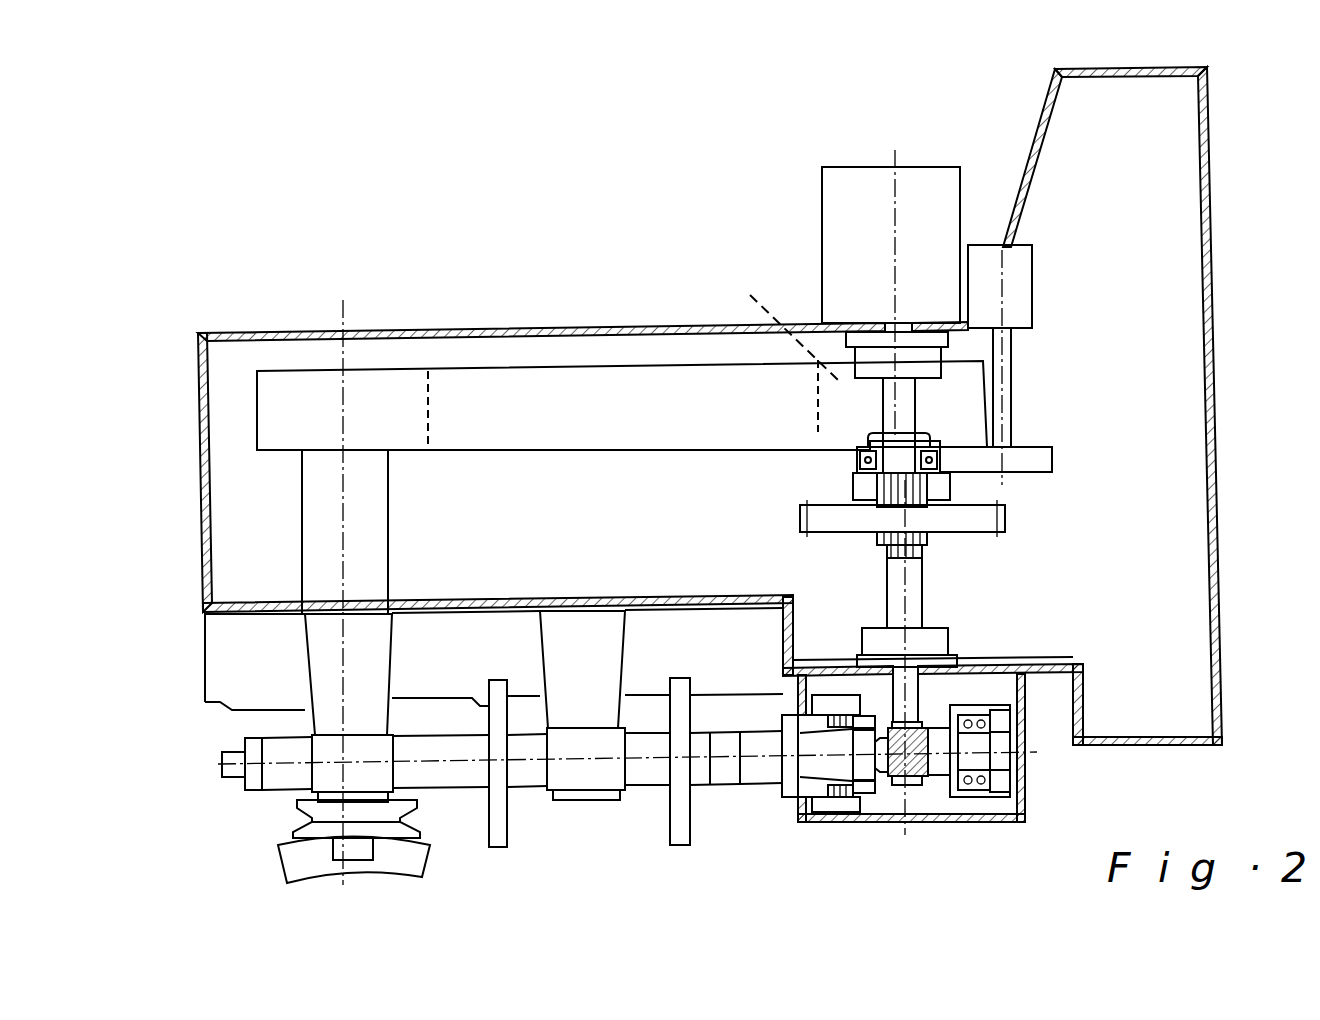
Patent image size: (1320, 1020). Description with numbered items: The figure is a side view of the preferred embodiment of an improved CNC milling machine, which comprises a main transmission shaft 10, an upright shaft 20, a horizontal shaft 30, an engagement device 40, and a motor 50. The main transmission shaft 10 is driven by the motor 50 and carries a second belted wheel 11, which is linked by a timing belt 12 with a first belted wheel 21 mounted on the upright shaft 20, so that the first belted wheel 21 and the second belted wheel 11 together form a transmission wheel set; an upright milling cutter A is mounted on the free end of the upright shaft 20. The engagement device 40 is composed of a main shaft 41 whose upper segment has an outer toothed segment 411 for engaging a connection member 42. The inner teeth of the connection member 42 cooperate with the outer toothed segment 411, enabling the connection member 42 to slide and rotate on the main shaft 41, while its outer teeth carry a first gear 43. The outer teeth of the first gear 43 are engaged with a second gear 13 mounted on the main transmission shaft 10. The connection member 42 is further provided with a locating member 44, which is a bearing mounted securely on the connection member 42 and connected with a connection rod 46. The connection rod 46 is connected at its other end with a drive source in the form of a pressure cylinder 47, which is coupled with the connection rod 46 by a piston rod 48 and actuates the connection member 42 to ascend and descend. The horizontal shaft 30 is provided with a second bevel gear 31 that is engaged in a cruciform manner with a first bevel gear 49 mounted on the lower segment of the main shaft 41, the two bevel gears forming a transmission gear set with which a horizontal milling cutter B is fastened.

The main transmission shaft 10 is at (883, 325).
The second belted wheel 11 is at (784, 349).
The timing belt 12 is at (541, 380).
The second gear 13 is at (855, 487).
The upright shaft 20 is at (310, 537).
The first belted wheel 21 is at (330, 382).
The horizontal shaft 30 is at (640, 776).
The second bevel gear 31 is at (922, 786).
The engagement device 40 is at (1034, 362).
The main shaft 41 is at (915, 612).
The outer toothed segment 411 is at (917, 553).
The connection member 42 is at (950, 487).
The first gear 43 is at (828, 526).
The locating member 44 is at (852, 460).
The connection rod 46 is at (1052, 462).
The pressure cylinder 47 is at (1018, 268).
The piston rod 48 is at (1005, 370).
The first bevel gear 49 is at (898, 786).
The motor 50 is at (933, 172).
The upright milling cutter A is at (425, 865).
The horizontal milling cutter B is at (500, 836).